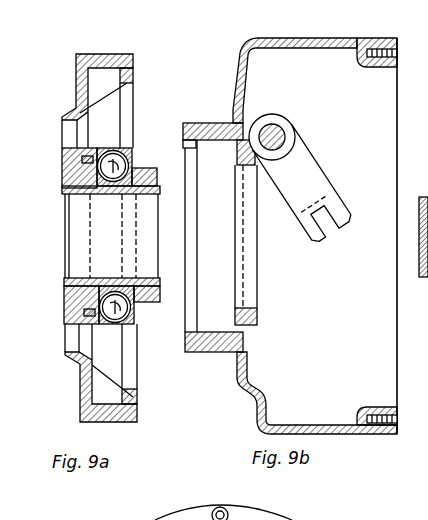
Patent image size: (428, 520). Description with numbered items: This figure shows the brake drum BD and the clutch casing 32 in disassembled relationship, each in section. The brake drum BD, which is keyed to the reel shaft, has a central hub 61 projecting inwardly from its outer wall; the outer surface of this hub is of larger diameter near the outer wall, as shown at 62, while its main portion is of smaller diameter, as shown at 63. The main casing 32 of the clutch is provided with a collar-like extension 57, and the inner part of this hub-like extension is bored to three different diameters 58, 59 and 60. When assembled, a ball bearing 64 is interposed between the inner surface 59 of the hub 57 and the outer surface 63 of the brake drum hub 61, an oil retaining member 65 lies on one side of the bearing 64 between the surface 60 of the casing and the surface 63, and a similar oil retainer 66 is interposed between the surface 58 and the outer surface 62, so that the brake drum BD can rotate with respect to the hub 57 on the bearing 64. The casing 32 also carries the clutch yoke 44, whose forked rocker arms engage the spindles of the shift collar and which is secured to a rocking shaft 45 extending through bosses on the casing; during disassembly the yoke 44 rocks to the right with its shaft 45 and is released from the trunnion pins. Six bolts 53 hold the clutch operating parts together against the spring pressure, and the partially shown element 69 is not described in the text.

In FIG. 9A, the brake drum BD is at (105, 54).
In FIG. 9A, the oil retainer 66 is at (67, 224).
In FIG. 9A, the larger-diameter outer surface of hub 62 is at (63, 168).
In FIG. 9A, the smaller-diameter outer surface of hub 63 is at (158, 186).
In FIG. 9A, the ball bearing 64 is at (113, 160).
In FIG. 9A, the oil retaining member 65 is at (145, 170).
In FIG. 9A, the central hub 61 is at (152, 295).
In FIG. 9B, the main clutch casing 32 is at (306, 38).
In FIG. 9B, the collar-like extension 57 is at (205, 123).
In FIG. 9B, the first bore diameter 58 is at (185, 148).
In FIG. 9B, the second bore diameter 59 is at (215, 142).
In FIG. 9B, the third bore diameter 60 is at (241, 172).
In FIG. 9B, the clutch yoke 44 is at (317, 166).
In FIG. 9B, the rocking shaft 45 is at (272, 132).
In FIG. 10, the bolt 53 is at (220, 508).
In FIG. 10, the cover 69 is at (311, 512).